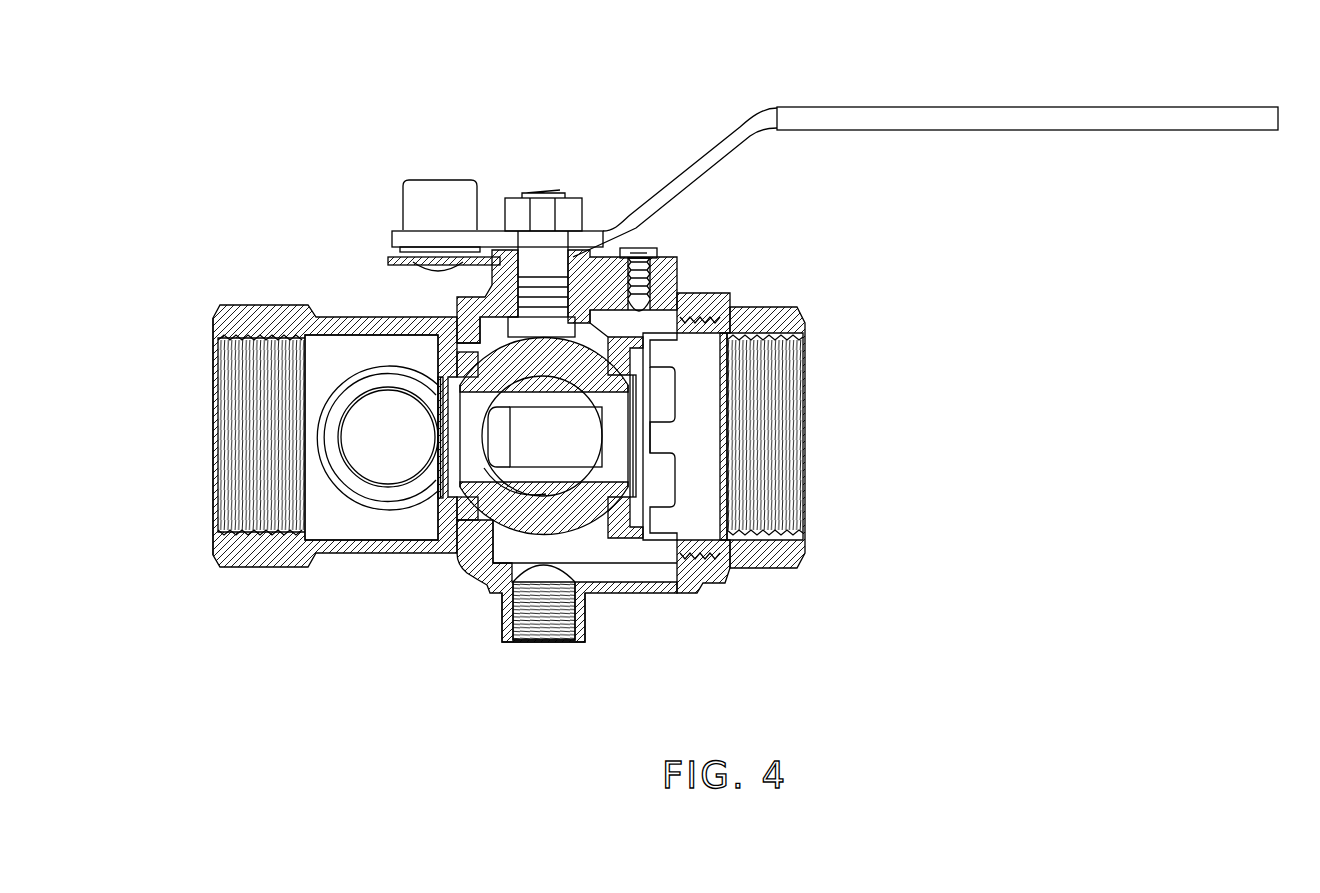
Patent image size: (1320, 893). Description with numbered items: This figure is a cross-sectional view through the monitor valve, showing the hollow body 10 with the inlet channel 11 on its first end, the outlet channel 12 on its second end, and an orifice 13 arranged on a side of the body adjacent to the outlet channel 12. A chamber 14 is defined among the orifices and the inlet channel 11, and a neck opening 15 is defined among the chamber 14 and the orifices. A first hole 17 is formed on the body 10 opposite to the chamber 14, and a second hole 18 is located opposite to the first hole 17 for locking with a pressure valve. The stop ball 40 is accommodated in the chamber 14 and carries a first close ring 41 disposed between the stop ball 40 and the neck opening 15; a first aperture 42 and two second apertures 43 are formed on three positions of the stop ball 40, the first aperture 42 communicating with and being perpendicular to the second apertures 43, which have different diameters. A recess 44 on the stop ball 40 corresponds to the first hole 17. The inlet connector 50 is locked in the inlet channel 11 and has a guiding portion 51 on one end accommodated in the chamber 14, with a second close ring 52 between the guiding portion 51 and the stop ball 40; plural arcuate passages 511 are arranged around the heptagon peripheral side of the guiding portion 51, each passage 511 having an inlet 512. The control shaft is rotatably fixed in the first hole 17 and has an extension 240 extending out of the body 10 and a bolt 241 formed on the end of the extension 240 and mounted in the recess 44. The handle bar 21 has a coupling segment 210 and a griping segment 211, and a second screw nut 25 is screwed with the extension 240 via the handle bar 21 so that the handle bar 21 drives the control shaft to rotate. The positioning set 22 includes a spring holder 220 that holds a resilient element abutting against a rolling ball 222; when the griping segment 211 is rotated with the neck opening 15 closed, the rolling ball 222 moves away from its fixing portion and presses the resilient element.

The body 10 is at (618, 608).
The inlet channel 11 is at (657, 570).
The outlet channel 12 is at (240, 444).
The orifice 13 is at (372, 447).
The chamber 14 is at (510, 550).
The neck opening 15 is at (450, 460).
The first hole 17 is at (640, 250).
The second hole 18 is at (548, 620).
The handle bar 21 is at (925, 144).
The griping segment 211 is at (1000, 110).
The positioning set 22 is at (445, 166).
The coupling segment 210 is at (490, 238).
The spring holder 220 is at (437, 195).
The rolling ball 222 is at (390, 260).
The extension 240 is at (540, 255).
The bolt 241 is at (550, 352).
The second screw nut 25 is at (575, 215).
The stop ball 40 is at (585, 530).
The first close ring 41 is at (463, 368).
The first aperture 42 is at (478, 505).
The second aperture 43 is at (440, 422).
The recess 44 is at (528, 345).
The inlet connector 50 is at (808, 334).
The guiding portion 51 is at (797, 407).
The arcuate passage 511 is at (658, 437).
The inlet 512 is at (663, 388).
The second close ring 52 is at (625, 510).